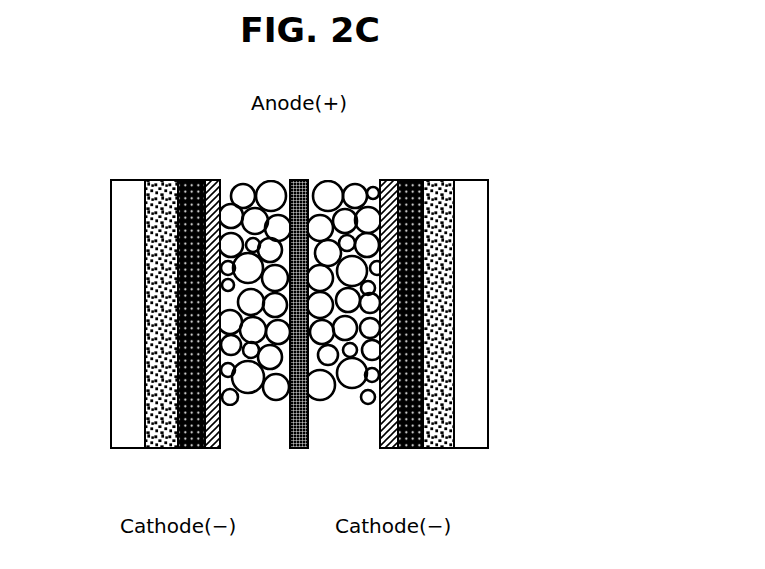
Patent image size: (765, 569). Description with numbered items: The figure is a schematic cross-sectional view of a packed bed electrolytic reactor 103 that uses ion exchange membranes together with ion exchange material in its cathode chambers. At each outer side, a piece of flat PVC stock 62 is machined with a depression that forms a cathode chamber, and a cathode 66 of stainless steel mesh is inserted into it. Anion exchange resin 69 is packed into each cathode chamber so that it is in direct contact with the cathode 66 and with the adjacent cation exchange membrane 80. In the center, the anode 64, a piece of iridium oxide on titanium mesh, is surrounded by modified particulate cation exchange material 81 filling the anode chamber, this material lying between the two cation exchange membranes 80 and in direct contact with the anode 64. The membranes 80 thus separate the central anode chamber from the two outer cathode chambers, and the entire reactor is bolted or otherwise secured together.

The packed bed electrolytic reactor 103 is at (520, 221).
The flat PVC stock 62 is at (135, 404).
The cathodes 66 is at (161, 450).
The anion exchange resin 69 is at (188, 180).
The cation exchange membranes 80 is at (211, 450).
The modified particulate cation exchange material 81 is at (247, 176).
The anode 64 is at (299, 180).